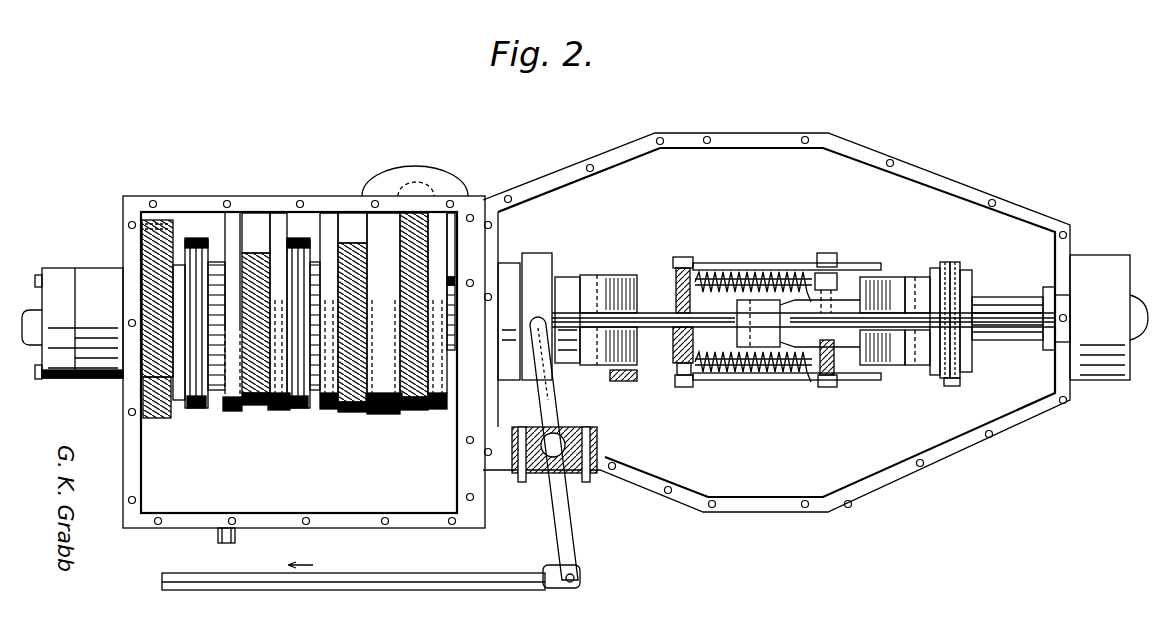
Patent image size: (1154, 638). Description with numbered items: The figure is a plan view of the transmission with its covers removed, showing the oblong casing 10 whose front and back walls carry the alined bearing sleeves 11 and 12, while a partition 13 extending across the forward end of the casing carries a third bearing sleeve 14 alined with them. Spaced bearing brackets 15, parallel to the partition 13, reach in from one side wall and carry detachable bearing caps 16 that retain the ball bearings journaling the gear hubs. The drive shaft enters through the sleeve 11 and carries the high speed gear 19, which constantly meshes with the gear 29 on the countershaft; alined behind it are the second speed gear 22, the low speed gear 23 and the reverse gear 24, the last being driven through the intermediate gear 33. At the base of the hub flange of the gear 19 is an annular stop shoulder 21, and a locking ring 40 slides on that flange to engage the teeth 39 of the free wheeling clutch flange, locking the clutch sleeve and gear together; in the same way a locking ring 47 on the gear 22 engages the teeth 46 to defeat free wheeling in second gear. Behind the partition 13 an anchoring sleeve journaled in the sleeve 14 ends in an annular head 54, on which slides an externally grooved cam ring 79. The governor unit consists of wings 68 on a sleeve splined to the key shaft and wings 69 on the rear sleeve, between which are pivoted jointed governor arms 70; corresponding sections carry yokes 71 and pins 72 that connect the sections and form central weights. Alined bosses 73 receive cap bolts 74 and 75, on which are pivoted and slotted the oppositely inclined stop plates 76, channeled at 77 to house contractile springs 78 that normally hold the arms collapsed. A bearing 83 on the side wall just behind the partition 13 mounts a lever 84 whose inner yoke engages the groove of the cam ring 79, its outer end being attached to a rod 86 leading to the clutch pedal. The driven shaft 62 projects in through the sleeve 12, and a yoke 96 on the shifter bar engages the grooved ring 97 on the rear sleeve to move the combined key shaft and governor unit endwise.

The casing 10 is at (945, 183).
The bearing sleeve 11 is at (100, 268).
The bearing sleeve 12 is at (1098, 257).
The partition 13 is at (468, 281).
The bearing sleeve 14 is at (514, 265).
The bearing brackets 15 is at (235, 228).
The bearing caps 16 is at (276, 403).
The high speed gear 19 is at (165, 368).
The annular stop shoulder 21 is at (183, 265).
The second speed gear 22 is at (253, 390).
The low speed gear 23 is at (356, 400).
The reverse gear 24 is at (415, 403).
The gear 29 is at (141, 412).
The intermediate gear 33 is at (400, 238).
The teeth 39 is at (216, 387).
The locking ring 40 is at (185, 300).
The teeth 46 is at (318, 383).
The locking ring 47 is at (305, 263).
The annular head 54 is at (566, 290).
The driven shaft 62 is at (1003, 312).
The wings 68 is at (620, 275).
The wings 69 is at (916, 285).
The governor arms 70 is at (648, 318).
The yokes 71 is at (795, 375).
The pins 72 is at (752, 380).
The bosses 73 is at (676, 350).
The cap bolts 74 is at (688, 258).
The cap bolts 75 is at (830, 255).
The stop plates 76 is at (882, 275).
The channels 77 is at (727, 381).
The contractile springs 78 is at (765, 272).
The cam ring 79 is at (548, 262).
The bearing 83 is at (598, 447).
The lever 84 is at (566, 527).
The rod 86 is at (417, 582).
The yoke 96 is at (957, 262).
The grooved ring 97 is at (962, 365).